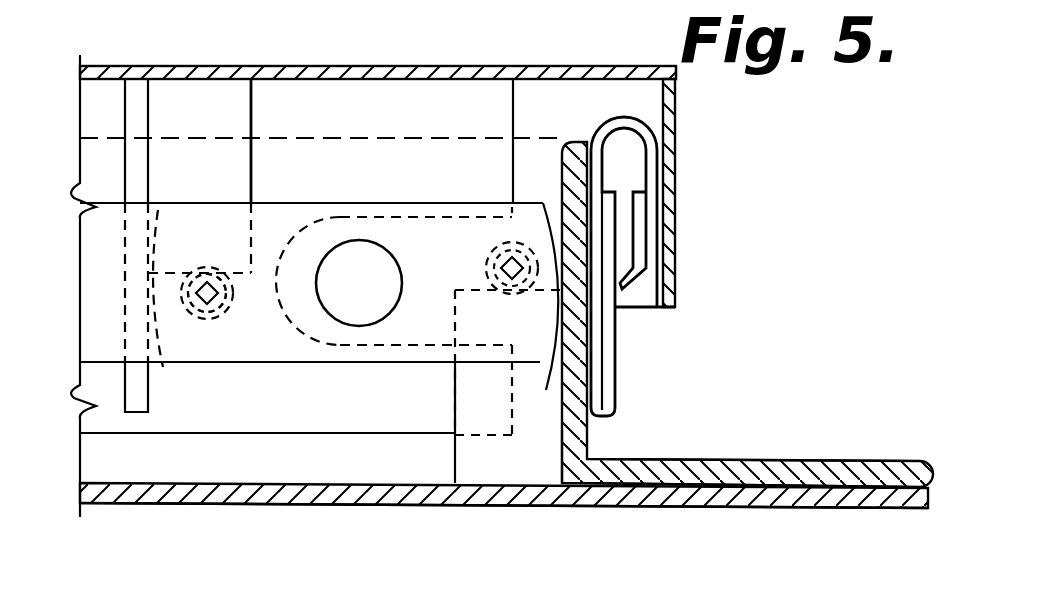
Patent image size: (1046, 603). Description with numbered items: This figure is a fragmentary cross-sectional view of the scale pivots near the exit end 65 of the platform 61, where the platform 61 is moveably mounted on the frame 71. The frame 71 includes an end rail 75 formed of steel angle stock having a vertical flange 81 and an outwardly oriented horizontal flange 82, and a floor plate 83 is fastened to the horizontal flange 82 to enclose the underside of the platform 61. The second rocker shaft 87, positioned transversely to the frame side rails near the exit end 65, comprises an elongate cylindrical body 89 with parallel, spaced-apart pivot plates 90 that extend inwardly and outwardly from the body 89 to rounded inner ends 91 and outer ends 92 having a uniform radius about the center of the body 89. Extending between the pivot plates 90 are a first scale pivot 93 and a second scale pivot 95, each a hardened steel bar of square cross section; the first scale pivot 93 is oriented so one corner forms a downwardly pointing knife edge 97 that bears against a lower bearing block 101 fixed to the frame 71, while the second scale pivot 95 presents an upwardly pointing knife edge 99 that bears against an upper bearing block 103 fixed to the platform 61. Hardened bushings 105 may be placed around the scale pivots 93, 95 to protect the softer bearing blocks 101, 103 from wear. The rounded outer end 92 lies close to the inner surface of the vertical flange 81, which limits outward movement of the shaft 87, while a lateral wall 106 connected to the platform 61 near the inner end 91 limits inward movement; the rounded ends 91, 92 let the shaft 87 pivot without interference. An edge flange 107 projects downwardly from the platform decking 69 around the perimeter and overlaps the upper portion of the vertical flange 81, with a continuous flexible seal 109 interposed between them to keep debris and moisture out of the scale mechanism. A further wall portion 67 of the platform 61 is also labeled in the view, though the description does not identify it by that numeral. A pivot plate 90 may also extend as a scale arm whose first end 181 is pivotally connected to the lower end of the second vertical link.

The platform 61 is at (528, 66).
The exit end 65 is at (678, 117).
The housing partition wall 67 is at (513, 107).
The platform decking 69 is at (437, 66).
The frame 71 is at (88, 464).
The end rail 75 is at (800, 461).
The vertical flange 81 is at (560, 447).
The horizontal flange 82 is at (630, 458).
The floor plate 83 is at (688, 510).
The second rocker shaft 87 is at (375, 201).
The cylindrical body 89 is at (398, 271).
The pivot plate 90 is at (300, 366).
The inner end 91 is at (160, 205).
The outer end 92 is at (539, 309).
The first scale pivot 93 is at (505, 243).
The second scale pivot 95 is at (212, 315).
The downwardly pointing knife edge 97 is at (515, 288).
The upwardly pointing knife edge 99 is at (208, 283).
The lower bearing block 101 is at (430, 389).
The upper bearing block 103 is at (252, 102).
The hardened bushing 105 is at (228, 297).
The lateral wall 106 is at (149, 395).
The edge flange 107 is at (678, 255).
The flexible seal 109 is at (620, 116).
The first end 181 is at (80, 192).